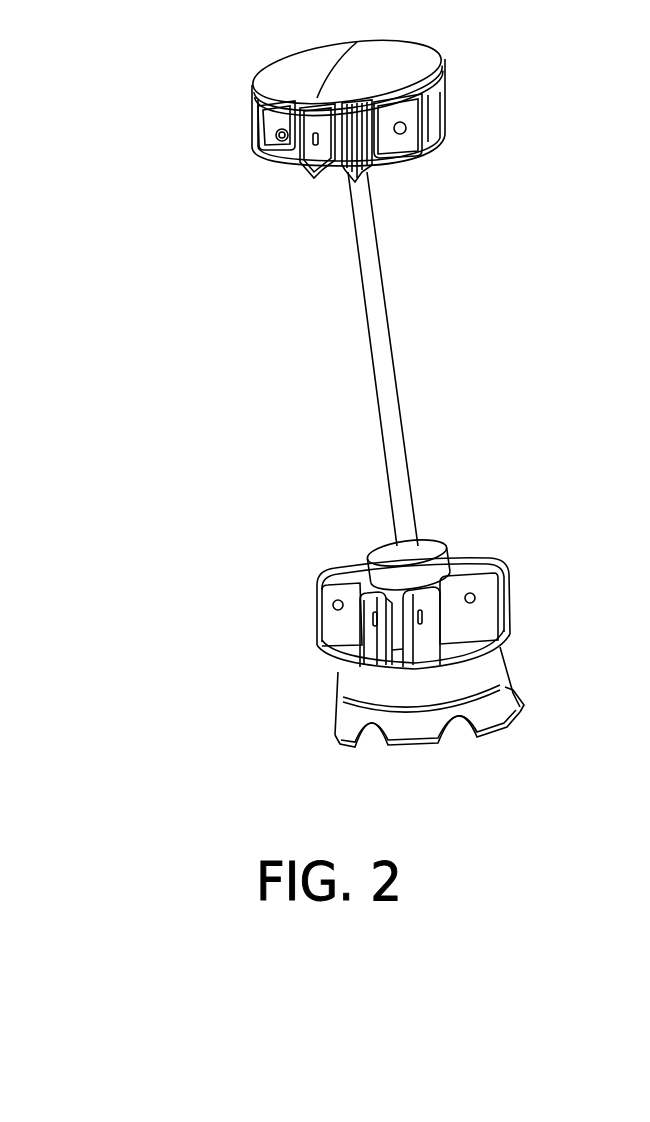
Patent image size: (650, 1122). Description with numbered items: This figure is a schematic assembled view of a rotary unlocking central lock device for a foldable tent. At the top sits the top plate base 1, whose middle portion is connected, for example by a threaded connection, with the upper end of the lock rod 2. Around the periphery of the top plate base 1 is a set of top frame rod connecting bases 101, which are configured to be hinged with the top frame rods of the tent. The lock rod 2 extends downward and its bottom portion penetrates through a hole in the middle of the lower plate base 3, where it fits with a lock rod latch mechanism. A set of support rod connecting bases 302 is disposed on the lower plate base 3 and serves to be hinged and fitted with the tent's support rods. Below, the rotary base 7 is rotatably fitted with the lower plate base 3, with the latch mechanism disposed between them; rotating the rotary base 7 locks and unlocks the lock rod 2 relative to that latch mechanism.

The top plate base 1 is at (297, 80).
The top frame rod connecting base 101 is at (263, 140).
The lock rod 2 is at (365, 298).
The support rod connecting base 302 is at (330, 575).
The lower plate base 3 is at (333, 672).
The rotary base 7 is at (350, 718).